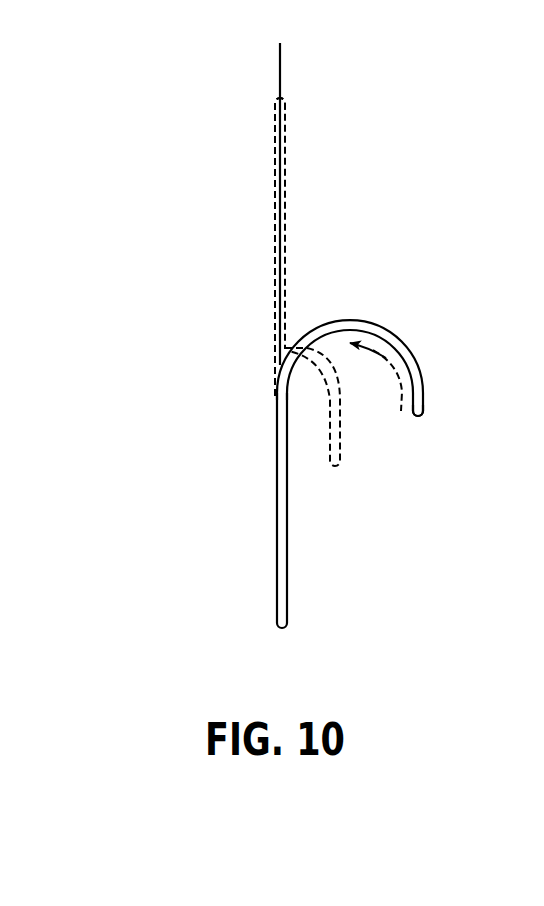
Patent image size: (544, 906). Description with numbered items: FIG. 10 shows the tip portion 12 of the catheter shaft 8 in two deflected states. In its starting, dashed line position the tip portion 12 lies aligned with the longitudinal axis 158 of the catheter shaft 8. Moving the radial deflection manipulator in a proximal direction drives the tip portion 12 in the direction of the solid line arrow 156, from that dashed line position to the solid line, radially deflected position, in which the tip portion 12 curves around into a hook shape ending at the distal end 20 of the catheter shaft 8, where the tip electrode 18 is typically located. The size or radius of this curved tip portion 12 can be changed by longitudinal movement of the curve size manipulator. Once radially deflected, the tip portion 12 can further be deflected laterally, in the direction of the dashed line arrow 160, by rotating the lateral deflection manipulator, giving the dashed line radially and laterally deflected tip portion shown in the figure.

The catheter shaft 8 is at (270, 529).
The tip portion 12 is at (274, 187).
The tip electrode 18 is at (284, 99).
The distal end 20 is at (427, 414).
The arrow 156 is at (297, 203).
The longitudinal axis 158 is at (280, 66).
The arrow 160 is at (354, 444).